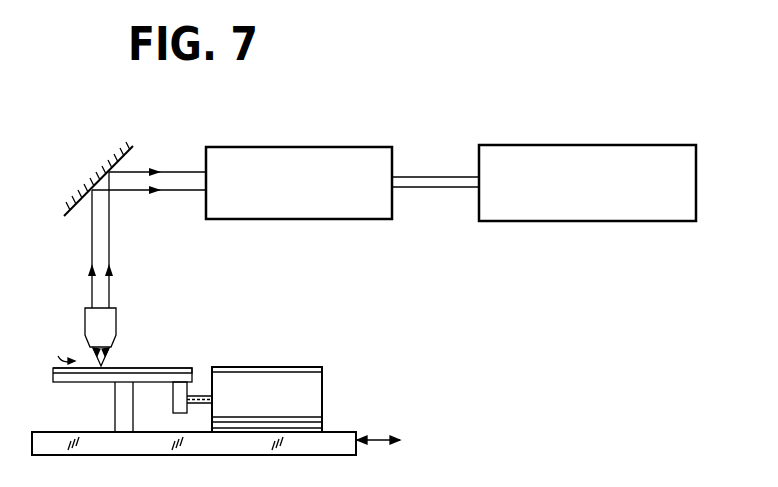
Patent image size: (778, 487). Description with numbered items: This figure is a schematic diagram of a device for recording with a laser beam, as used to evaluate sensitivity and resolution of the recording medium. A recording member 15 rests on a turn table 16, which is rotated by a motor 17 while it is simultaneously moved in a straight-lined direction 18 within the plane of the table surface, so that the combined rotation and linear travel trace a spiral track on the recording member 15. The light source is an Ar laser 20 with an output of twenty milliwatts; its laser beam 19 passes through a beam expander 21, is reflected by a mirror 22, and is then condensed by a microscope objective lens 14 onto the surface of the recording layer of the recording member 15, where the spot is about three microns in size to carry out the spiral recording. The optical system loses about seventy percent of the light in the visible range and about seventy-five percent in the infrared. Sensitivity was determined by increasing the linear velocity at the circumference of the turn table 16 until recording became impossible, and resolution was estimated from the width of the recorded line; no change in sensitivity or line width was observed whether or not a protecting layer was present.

The microscope objective lens 14 is at (110, 326).
The recording member 15 is at (54, 368).
The turn table 16 is at (53, 378).
The motor 17 is at (318, 393).
The straight-lined direction 18 is at (386, 440).
The laser beam 19 is at (432, 177).
The Ar laser 20 is at (582, 145).
The beam expander 21 is at (287, 147).
The mirror 22 is at (100, 167).